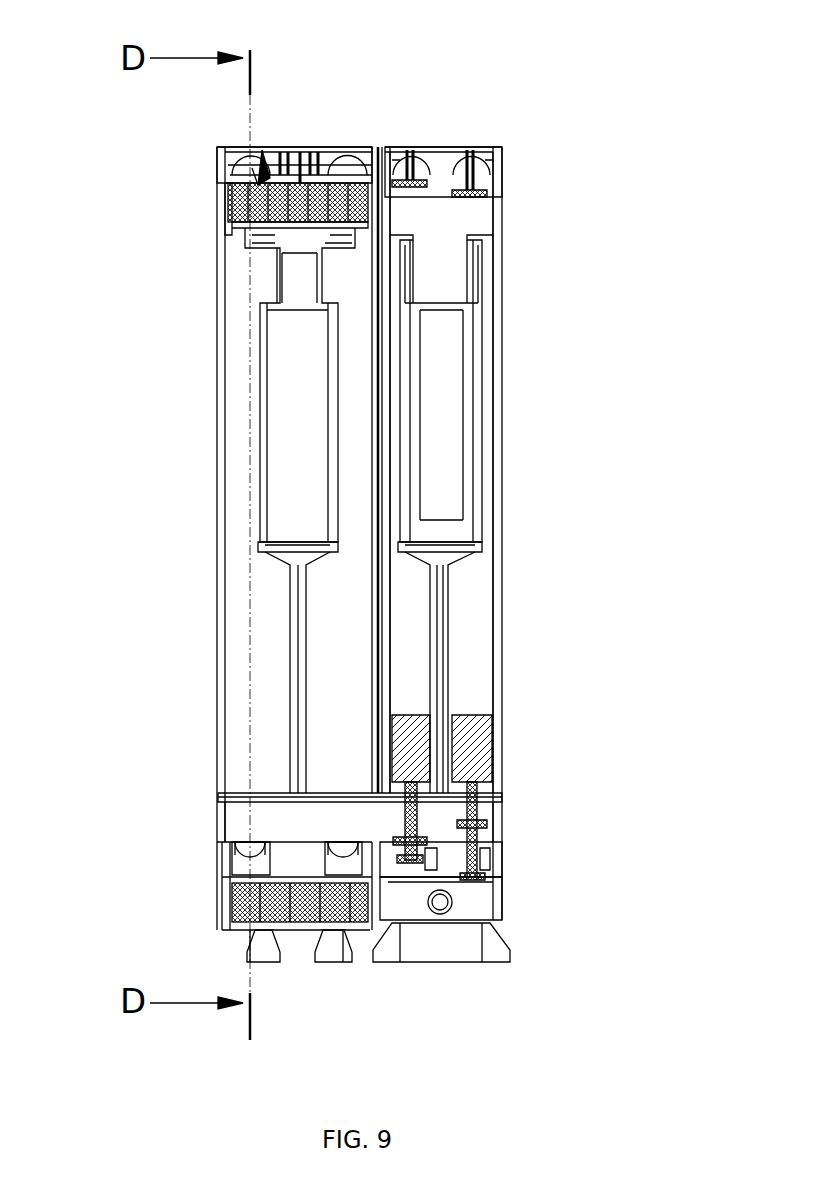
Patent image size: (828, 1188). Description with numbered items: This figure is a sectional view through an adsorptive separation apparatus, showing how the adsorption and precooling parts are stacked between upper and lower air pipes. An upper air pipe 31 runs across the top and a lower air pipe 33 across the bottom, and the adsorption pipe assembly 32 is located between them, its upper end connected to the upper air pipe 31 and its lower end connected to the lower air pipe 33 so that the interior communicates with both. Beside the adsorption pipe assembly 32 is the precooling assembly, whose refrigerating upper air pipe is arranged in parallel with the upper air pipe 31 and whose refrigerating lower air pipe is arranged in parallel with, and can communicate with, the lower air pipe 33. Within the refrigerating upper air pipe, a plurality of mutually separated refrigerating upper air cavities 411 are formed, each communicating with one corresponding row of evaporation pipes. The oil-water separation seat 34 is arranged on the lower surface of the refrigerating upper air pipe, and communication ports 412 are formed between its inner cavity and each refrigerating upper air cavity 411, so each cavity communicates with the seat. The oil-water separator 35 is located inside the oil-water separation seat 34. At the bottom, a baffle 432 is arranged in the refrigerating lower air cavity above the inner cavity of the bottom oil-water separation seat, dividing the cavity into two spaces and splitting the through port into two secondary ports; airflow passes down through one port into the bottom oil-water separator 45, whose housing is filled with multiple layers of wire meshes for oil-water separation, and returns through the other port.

The refrigerating upper air cavity 411 is at (230, 148).
The communication port 412 is at (262, 150).
The oil-water separation seat 34 is at (228, 190).
The oil-water separator 35 is at (228, 205).
The upper air pipe 31 is at (420, 147).
The adsorption pipe assembly 32 is at (458, 637).
The lower air pipe 33 is at (478, 853).
The baffle 432 is at (240, 850).
The bottom oil-water separator 45 is at (235, 910).